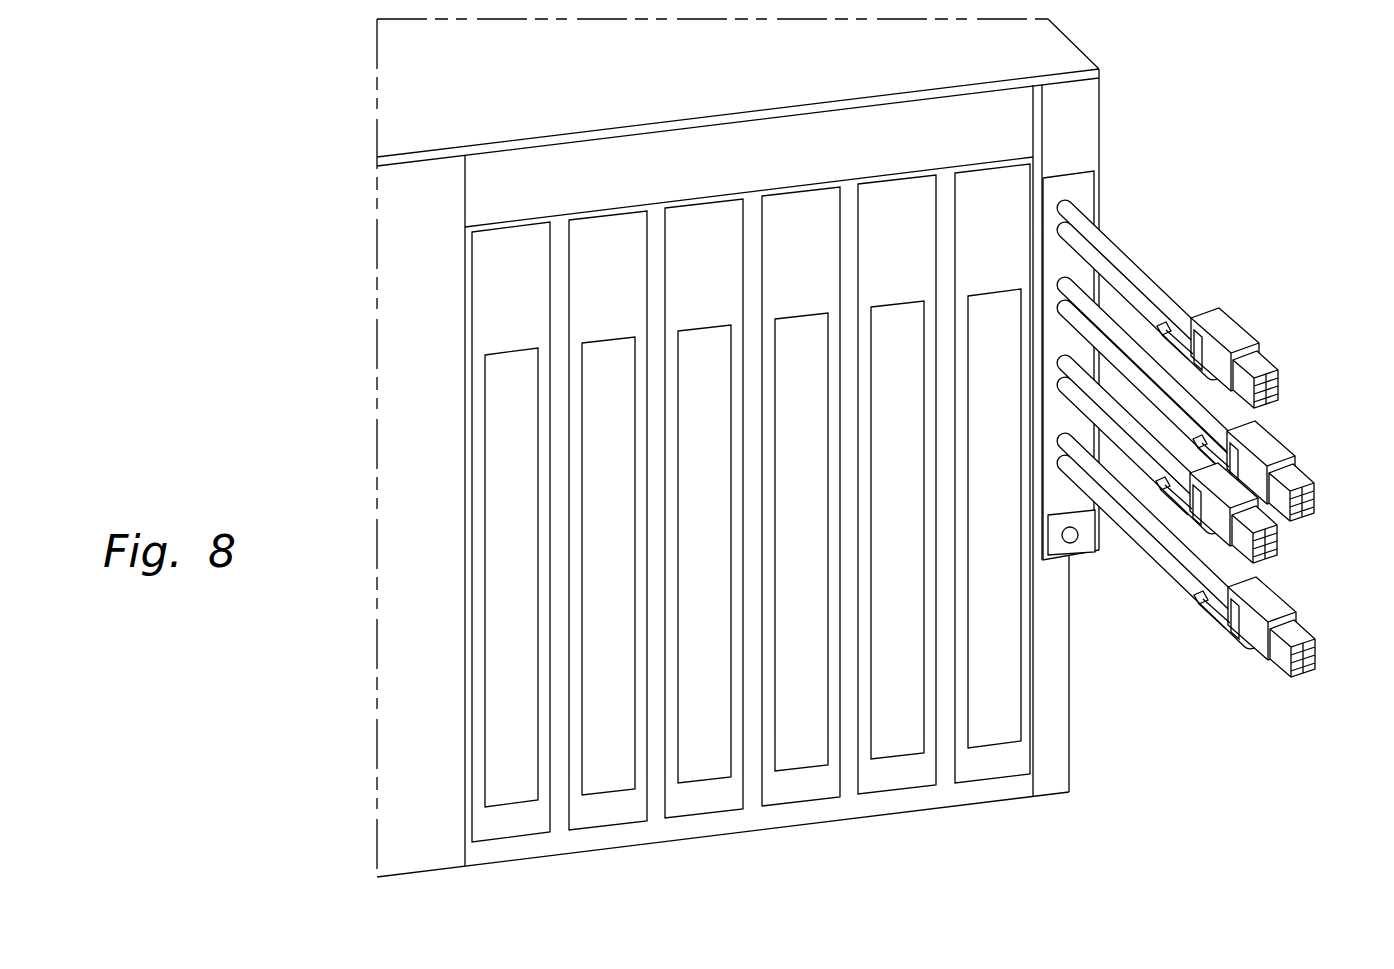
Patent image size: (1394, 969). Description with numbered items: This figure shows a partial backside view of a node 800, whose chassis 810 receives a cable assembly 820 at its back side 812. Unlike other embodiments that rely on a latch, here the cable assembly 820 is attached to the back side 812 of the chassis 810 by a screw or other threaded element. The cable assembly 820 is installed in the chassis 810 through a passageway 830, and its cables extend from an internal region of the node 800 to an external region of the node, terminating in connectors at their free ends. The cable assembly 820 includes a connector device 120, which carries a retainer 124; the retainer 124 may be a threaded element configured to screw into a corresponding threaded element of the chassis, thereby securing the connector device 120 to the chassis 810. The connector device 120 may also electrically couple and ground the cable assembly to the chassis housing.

The node 800 is at (1274, 74).
The chassis 810 is at (1053, 48).
The back side 812 is at (1062, 686).
The cable assembly 820 is at (1163, 277).
The passageway 830 is at (1099, 190).
The connector device 120 is at (1073, 503).
The retainer 124 is at (1075, 540).